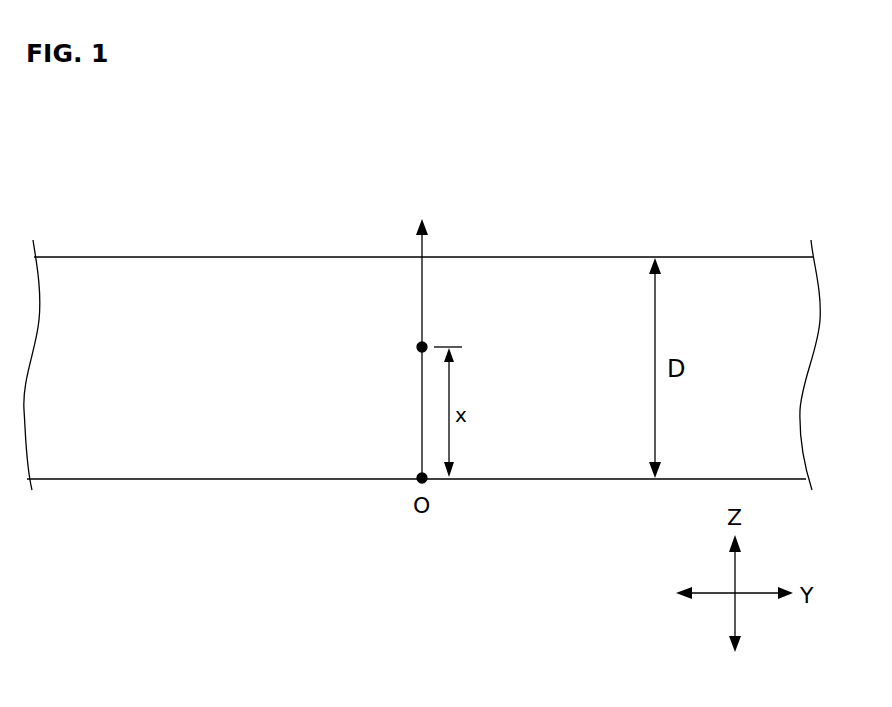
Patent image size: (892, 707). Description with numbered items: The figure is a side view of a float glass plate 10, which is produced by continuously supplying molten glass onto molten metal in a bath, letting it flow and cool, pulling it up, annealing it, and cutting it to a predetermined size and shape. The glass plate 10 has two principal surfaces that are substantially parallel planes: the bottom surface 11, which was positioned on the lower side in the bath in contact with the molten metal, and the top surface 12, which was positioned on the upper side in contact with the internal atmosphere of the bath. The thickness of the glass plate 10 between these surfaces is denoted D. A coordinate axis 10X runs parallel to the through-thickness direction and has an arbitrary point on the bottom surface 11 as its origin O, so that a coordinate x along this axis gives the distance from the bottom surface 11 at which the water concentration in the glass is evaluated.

The float glass plate 10 is at (105, 229).
The bottom surface 11 is at (308, 480).
The top surface 12 is at (303, 256).
The coordinate axis 10X is at (424, 336).